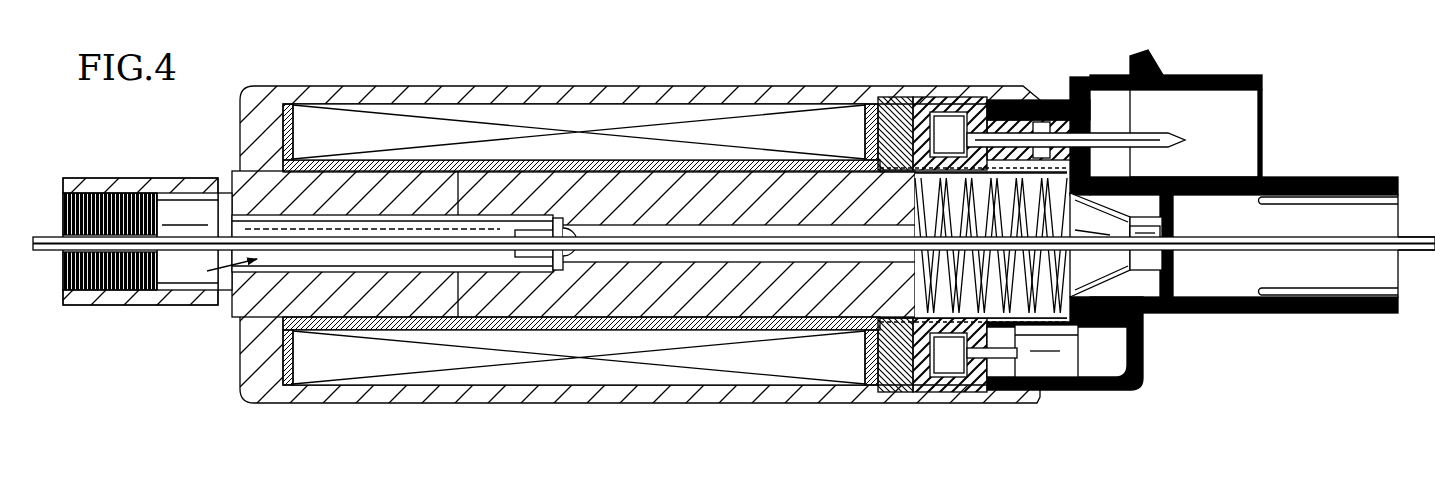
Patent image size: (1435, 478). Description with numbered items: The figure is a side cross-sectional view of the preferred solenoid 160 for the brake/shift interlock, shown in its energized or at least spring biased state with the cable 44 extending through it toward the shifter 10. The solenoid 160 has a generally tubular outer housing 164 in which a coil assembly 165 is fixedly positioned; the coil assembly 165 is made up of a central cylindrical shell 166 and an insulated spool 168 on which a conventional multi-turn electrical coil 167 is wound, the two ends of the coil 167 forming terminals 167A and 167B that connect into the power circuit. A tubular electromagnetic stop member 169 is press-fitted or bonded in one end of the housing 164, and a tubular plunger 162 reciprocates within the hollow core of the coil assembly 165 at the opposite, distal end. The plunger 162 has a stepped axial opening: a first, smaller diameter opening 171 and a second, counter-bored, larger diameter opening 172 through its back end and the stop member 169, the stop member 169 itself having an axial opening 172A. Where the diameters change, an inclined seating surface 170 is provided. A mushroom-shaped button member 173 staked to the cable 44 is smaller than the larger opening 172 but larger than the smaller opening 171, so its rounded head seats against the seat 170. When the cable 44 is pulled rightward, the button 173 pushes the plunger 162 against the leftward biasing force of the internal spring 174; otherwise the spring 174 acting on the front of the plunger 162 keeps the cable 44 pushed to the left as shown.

The solenoid 160 is at (640, 208).
The plunger 162 is at (853, 300).
The outer housing 164 is at (471, 92).
The coil assembly 165 is at (574, 215).
The central cylindrical shell 166 is at (400, 310).
The electrical coil 167 is at (377, 142).
The coil end terminal 167A is at (1003, 397).
The coil end terminal 167B is at (1140, 131).
The insulated spool 168 is at (858, 151).
The stop member 169 is at (243, 187).
The seating surface 170 is at (577, 249).
The smaller diameter axial opening 171 is at (643, 267).
The larger diameter axial opening 172 is at (485, 215).
The axial opening in stop member 172A is at (209, 272).
The button member 173 is at (552, 258).
The spring 174 is at (1036, 278).
The cable 44 is at (1178, 244).
The shifter 10 is at (1416, 243).